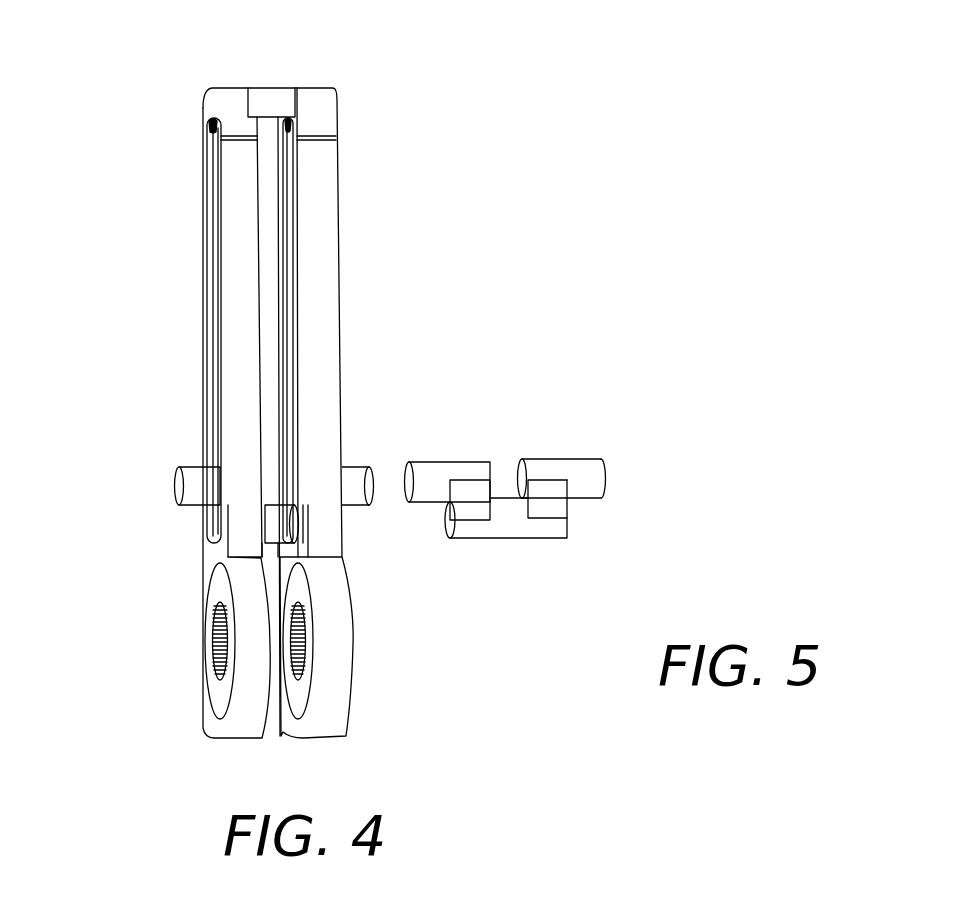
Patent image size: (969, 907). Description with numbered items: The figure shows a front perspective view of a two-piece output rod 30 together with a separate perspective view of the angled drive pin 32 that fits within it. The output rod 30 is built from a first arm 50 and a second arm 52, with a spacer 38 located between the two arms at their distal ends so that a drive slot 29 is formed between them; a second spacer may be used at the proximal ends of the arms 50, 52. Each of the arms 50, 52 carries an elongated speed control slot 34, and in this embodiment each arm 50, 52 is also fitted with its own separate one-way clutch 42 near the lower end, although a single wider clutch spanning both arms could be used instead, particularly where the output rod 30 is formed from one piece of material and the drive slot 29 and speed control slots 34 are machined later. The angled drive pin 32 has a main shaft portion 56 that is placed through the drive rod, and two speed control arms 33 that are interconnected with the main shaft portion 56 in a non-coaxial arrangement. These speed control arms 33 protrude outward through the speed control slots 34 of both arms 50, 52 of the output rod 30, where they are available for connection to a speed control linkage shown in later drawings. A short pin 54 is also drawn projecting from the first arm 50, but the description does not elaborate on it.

In FIG. 4, the output rod 30 is at (237, 95).
In FIG. 4, the spacer 38 is at (277, 97).
In FIG. 4, the first arm 50 is at (240, 201).
In FIG. 4, the second arm 52 is at (322, 206).
In FIG. 4, the speed control slots 34 is at (210, 277).
In FIG. 4, the drive slot 29 is at (300, 287).
In FIG. 4, the pin 54 is at (200, 485).
In FIG. 4, the speed control arms 33 is at (378, 463).
In FIG. 5, the speed control arms 33 is at (582, 468).
In FIG. 4, the one-way clutch 42 is at (225, 592).
In FIG. 5, the main shaft portion 56 is at (548, 527).
In FIG. 5, the angled drive pin 32 is at (551, 500).